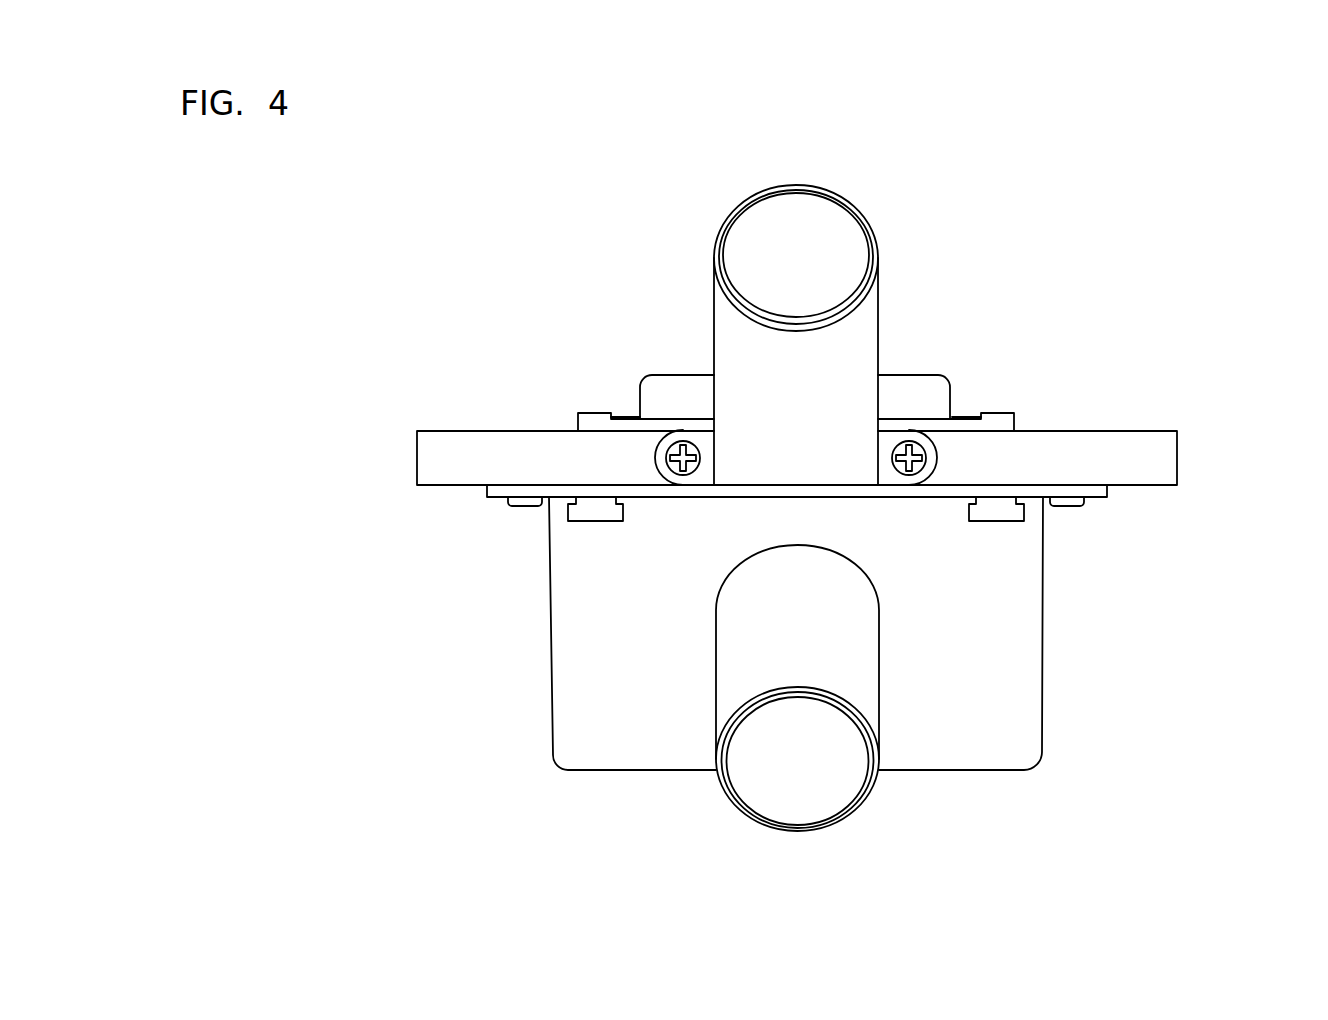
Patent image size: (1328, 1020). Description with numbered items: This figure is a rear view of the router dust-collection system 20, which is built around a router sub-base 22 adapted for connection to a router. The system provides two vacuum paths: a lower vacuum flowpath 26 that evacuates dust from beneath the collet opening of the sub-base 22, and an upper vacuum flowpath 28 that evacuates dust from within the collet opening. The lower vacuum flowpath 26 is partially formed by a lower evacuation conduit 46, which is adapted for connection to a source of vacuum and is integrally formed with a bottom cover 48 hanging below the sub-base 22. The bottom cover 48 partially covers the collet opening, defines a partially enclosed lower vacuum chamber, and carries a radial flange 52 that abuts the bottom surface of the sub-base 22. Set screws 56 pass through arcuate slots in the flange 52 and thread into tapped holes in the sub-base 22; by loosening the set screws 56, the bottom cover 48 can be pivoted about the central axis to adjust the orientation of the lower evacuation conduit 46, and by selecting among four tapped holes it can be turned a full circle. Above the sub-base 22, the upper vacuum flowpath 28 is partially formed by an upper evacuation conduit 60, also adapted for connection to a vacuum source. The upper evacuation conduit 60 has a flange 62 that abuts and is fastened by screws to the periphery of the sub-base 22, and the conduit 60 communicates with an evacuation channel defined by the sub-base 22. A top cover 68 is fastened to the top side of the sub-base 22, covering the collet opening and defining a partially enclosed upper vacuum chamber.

The router dust-collection system 20 is at (993, 160).
The router sub-base 22 is at (1180, 429).
The lower vacuum flowpath 26 is at (838, 805).
The upper vacuum flowpath 28 is at (800, 207).
The lower evacuation conduit 46 is at (725, 725).
The bottom cover 48 is at (558, 768).
The radial flange 52 is at (487, 497).
The set screws 56 is at (592, 521).
The upper evacuation conduit 60 is at (878, 270).
The flange 62 is at (940, 460).
The top cover 68 is at (950, 377).